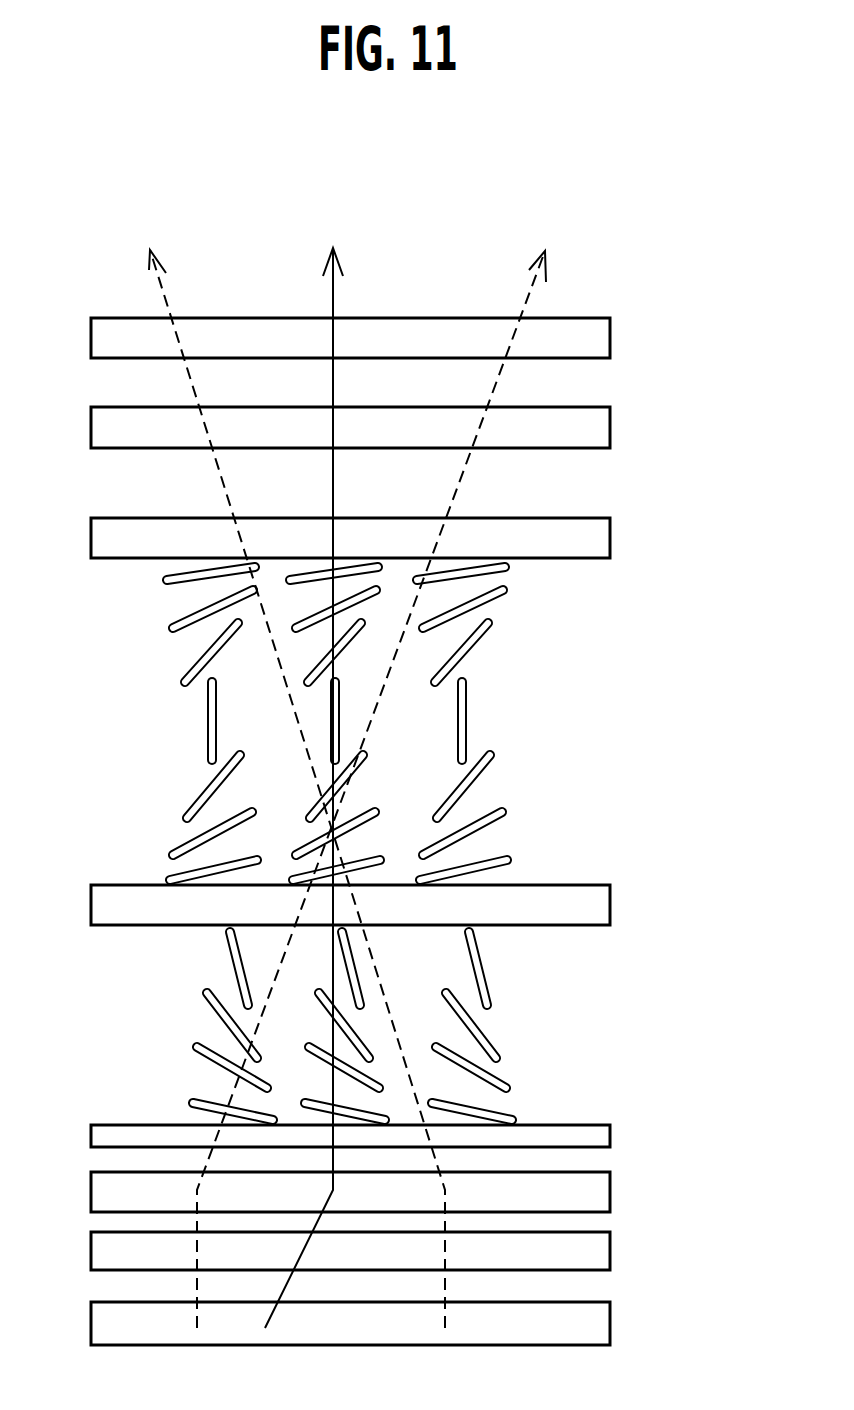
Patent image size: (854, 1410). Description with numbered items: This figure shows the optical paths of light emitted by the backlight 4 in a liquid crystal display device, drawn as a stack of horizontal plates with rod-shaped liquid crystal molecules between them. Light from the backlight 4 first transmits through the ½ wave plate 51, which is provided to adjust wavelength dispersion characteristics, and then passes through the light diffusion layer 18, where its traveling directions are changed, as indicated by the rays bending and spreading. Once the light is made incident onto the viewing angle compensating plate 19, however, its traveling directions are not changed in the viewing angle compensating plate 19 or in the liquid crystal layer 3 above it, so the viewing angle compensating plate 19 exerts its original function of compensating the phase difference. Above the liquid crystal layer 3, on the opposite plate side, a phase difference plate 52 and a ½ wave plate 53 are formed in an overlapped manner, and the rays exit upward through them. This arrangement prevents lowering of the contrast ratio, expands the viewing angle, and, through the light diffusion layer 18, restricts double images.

The ½ wave plate 53 is at (610, 336).
The phase difference plate 52 is at (610, 426).
The liquid crystal layer 3 is at (622, 570).
The viewing angle compensating plate 19 is at (622, 940).
The light diffusion layer 18 is at (610, 1190).
The ½ wave plate 51 is at (610, 1249).
The backlight 4 is at (610, 1322).